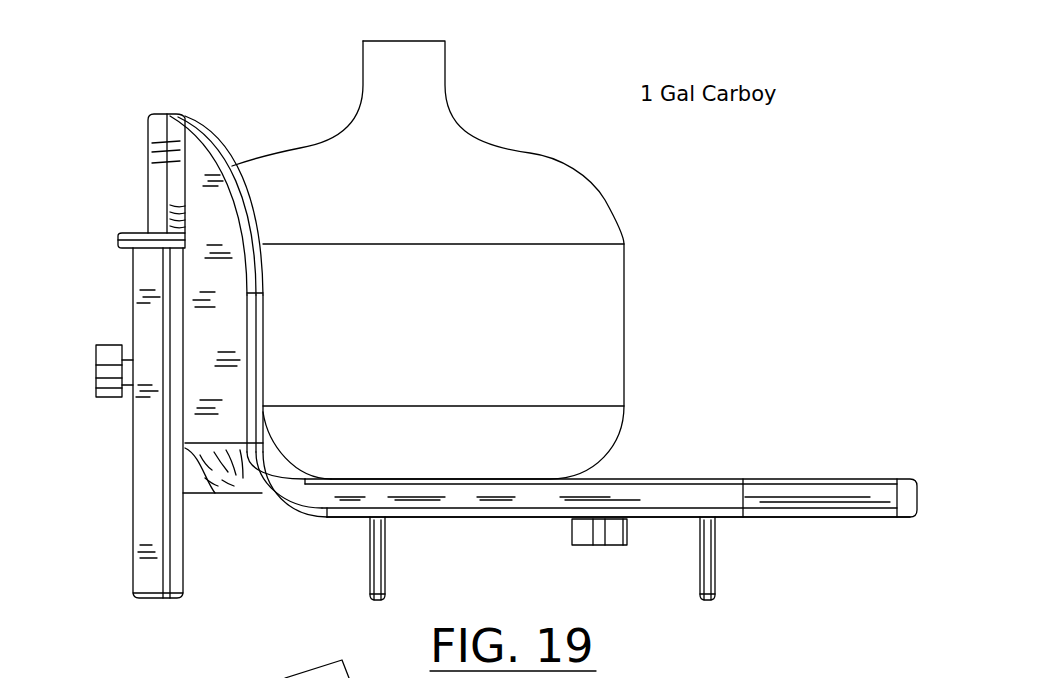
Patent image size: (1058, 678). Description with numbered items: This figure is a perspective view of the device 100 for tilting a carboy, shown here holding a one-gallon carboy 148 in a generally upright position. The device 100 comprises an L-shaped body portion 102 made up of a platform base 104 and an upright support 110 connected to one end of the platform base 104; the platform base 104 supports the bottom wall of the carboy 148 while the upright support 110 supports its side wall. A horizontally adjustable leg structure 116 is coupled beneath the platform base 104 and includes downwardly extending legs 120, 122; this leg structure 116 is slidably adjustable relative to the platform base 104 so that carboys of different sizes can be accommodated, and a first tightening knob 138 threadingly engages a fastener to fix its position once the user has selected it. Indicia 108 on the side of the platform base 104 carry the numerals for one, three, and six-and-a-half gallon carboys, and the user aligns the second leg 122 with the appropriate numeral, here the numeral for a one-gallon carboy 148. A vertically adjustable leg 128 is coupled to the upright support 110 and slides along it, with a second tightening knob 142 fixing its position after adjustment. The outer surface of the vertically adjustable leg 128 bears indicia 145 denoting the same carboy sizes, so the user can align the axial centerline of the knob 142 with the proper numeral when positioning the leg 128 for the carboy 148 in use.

The device for tilting a carboy 100 is at (281, 600).
The L-shaped body portion 102 is at (208, 375).
The platform base 104 is at (758, 492).
The indicia 108 is at (381, 479).
The upright support 110 is at (207, 210).
The horizontally adjustable leg structure 116 is at (463, 520).
The leg 120 is at (707, 578).
The second leg 122 is at (378, 562).
The vertically adjustable leg 128 is at (133, 286).
The first tightening knob 138 is at (587, 538).
The second tightening knob 142 is at (113, 363).
The indicia 145 is at (163, 513).
The 1-gallon carboy 148 is at (550, 223).